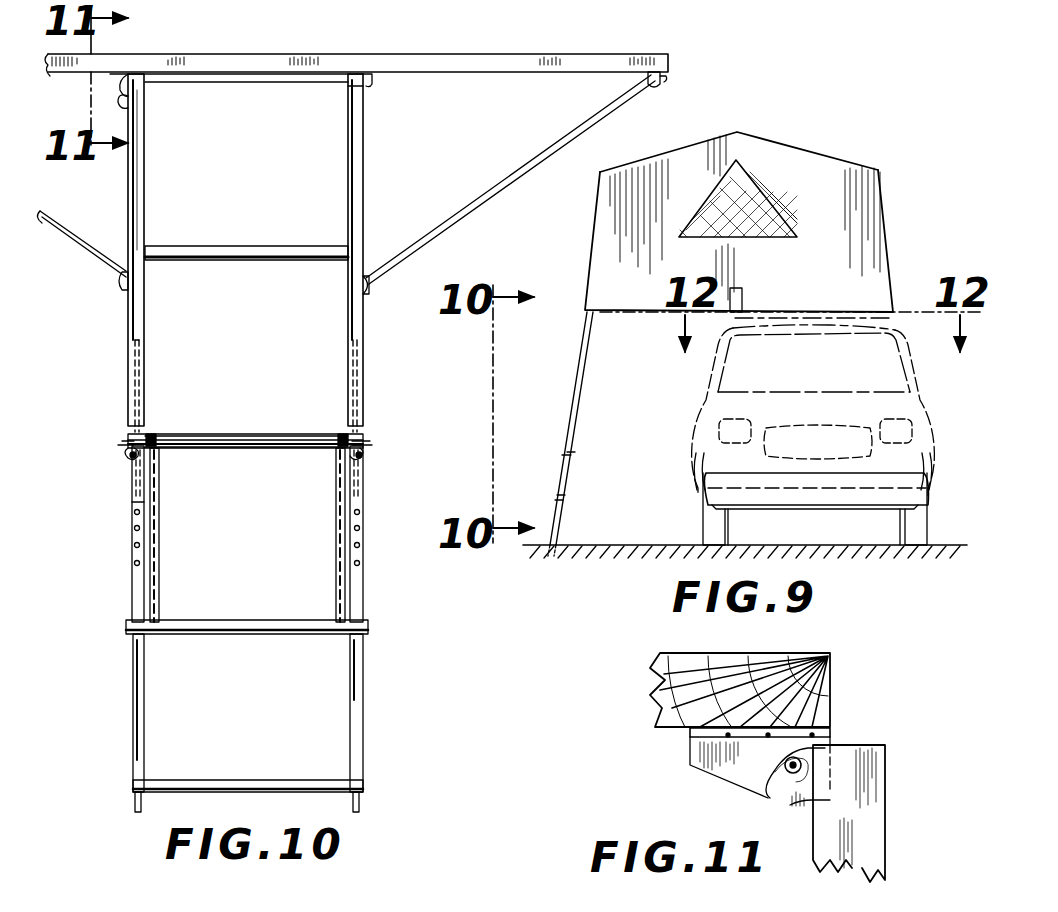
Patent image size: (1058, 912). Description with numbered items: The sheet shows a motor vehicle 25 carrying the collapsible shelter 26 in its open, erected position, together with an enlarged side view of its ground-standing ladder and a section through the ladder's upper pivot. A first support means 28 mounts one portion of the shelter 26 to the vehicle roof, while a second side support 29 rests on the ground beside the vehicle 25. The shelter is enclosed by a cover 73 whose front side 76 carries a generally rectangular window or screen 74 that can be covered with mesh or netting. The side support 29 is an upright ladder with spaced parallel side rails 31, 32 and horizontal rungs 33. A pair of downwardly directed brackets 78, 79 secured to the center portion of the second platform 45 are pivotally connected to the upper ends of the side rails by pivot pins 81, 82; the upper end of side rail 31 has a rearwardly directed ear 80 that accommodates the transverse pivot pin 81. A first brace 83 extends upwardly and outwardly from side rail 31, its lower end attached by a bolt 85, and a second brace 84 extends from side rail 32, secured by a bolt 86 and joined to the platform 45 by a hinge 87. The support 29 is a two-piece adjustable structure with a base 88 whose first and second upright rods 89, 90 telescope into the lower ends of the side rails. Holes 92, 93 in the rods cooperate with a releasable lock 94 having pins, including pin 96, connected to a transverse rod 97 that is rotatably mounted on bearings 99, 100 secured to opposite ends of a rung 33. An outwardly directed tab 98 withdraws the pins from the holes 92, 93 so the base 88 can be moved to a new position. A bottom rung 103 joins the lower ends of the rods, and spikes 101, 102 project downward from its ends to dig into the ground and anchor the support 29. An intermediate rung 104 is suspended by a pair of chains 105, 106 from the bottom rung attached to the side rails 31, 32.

In FIG. 9, the motor vehicle 25 is at (774, 431).
In FIG. 9, the collapsible shelter 26 is at (728, 203).
In FIG. 9, the first support means 28 is at (720, 334).
In FIG. 10, the second side support 29 is at (370, 660).
In FIG. 9, the second side support 29 is at (596, 372).
In FIG. 10, the side rail 31 is at (145, 326).
In FIG. 11, the side rail 31 is at (870, 828).
In FIG. 10, the side rail 32 is at (348, 328).
In FIG. 10, the rung 33 is at (245, 250).
In FIG. 10, the second platform 45 is at (521, 54).
In FIG. 11, the second platform 45 is at (842, 668).
In FIG. 9, the cover 73 is at (776, 150).
In FIG. 9, the window or screen 74 is at (760, 222).
In FIG. 9, the front side 76 is at (596, 226).
In FIG. 10, the bracket 78 is at (130, 112).
In FIG. 11, the bracket 78 is at (708, 758).
In FIG. 10, the bracket 79 is at (368, 92).
In FIG. 11, the ear 80 is at (786, 770).
In FIG. 10, the pivot pin 81 is at (118, 80).
In FIG. 11, the pivot pin 81 is at (789, 772).
In FIG. 10, the pivot pin 82 is at (372, 80).
In FIG. 10, the first brace 83 is at (82, 232).
In FIG. 10, the second brace 84 is at (502, 186).
In FIG. 10, the bolt 85 is at (118, 284).
In FIG. 10, the bolt 86 is at (374, 284).
In FIG. 10, the hinge 87 is at (648, 82).
In FIG. 10, the base 88 is at (130, 688).
In FIG. 10, the first upright rod 89 is at (132, 594).
In FIG. 10, the second upright rod 90 is at (364, 598).
In FIG. 10, the holes 92 is at (133, 548).
In FIG. 10, the holes 93 is at (362, 563).
In FIG. 10, the releasable lock 94 is at (277, 432).
In FIG. 10, the pin 96 is at (366, 452).
In FIG. 10, the transverse rod 97 is at (240, 447).
In FIG. 10, the tab 98 is at (124, 438).
In FIG. 10, the bearing 99 is at (153, 436).
In FIG. 10, the bearing 100 is at (341, 438).
In FIG. 10, the spike 101 is at (134, 800).
In FIG. 10, the spike 102 is at (360, 800).
In FIG. 9, the spike 102 is at (550, 552).
In FIG. 10, the bottom rung 103 is at (244, 780).
In FIG. 10, the intermediate rung 104 is at (248, 622).
In FIG. 10, the chain 105 is at (162, 516).
In FIG. 10, the chain 106 is at (336, 528).